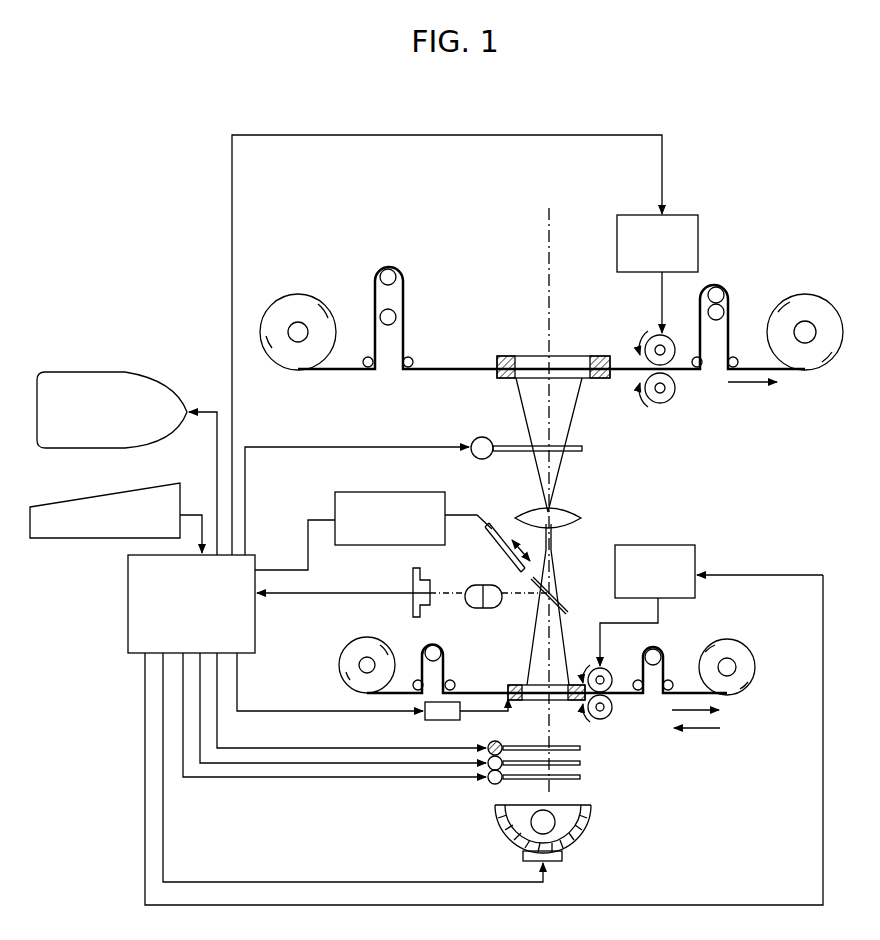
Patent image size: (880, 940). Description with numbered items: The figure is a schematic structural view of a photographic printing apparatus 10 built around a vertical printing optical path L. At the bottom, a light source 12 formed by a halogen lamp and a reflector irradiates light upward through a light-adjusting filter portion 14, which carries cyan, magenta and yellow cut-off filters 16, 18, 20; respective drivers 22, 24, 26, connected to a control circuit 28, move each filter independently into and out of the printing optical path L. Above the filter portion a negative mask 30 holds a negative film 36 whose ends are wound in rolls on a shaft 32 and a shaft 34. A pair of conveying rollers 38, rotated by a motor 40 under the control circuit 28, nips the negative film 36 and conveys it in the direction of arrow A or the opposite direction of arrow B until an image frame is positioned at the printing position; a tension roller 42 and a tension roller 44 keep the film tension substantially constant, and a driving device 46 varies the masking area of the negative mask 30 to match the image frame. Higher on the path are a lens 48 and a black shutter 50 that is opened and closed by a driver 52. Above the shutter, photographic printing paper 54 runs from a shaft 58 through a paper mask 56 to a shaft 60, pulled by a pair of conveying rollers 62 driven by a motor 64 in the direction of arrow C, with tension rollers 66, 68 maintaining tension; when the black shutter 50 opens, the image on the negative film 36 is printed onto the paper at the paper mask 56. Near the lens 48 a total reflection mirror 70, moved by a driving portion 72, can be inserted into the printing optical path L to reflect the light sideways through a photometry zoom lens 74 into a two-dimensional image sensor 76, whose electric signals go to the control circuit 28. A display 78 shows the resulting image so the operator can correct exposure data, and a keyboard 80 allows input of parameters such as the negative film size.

The photographic printing apparatus 10 is at (511, 249).
The light source 12 is at (584, 829).
The light-adjusting filter portion 14 is at (631, 768).
The cut-off filter 16 is at (522, 700).
The cut-off filter 18 is at (492, 770).
The cut-off filter 20 is at (501, 784).
The driver 22 is at (495, 741).
The driver 24 is at (486, 745).
The driver 26 is at (492, 784).
The control circuit 28 is at (128, 633).
The negative mask 30 is at (562, 703).
The shaft 32 is at (360, 658).
The shaft 34 is at (745, 686).
The negative film 36 is at (478, 690).
The conveying rollers 38 is at (616, 713).
The motor 40 is at (698, 560).
The tension roller 42 is at (442, 652).
The tension roller 44 is at (661, 657).
The driving device 46 is at (425, 704).
The lens 48 is at (582, 514).
The black shutter 50 is at (500, 428).
The driver 52 is at (488, 459).
The photographic printing paper 54 is at (438, 372).
The paper mask 56 is at (597, 355).
The shaft 58 is at (298, 322).
The shaft 60 is at (805, 344).
The conveying rollers 62 is at (679, 393).
The motor 64 is at (700, 232).
The tension roller 66 is at (396, 317).
The tension roller 68 is at (724, 310).
The total reflection mirror 70 is at (505, 551).
The driving portion 72 is at (385, 492).
The zoom lens 74 is at (483, 608).
The image sensor 76 is at (413, 580).
The display 78 is at (120, 372).
The keyboard 80 is at (80, 538).
The printing optical path L is at (556, 245).
The direction of arrow A is at (715, 707).
The direction of arrow B is at (700, 728).
The direction of arrow C is at (745, 383).